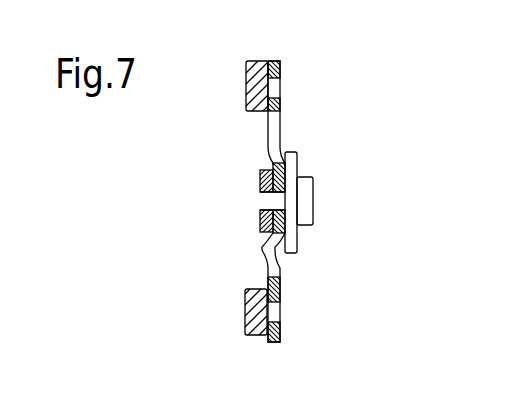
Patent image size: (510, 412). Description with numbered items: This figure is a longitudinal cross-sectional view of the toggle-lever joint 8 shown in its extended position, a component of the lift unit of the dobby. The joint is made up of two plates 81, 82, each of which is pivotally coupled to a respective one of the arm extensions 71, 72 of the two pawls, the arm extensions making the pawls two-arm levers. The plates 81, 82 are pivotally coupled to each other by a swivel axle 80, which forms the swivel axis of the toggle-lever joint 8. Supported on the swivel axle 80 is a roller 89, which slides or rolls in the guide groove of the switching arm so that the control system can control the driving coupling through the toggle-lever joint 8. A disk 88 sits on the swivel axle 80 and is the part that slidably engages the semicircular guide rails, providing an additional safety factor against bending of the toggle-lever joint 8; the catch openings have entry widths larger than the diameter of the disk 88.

The toggle-lever joint 8 is at (248, 210).
The arm extension 71 is at (257, 72).
The arm extension 72 is at (258, 313).
The swivel axle 80 is at (275, 202).
The plate 81 is at (275, 132).
The plate 82 is at (272, 262).
The disk 88 is at (290, 160).
The roller 89 is at (305, 202).